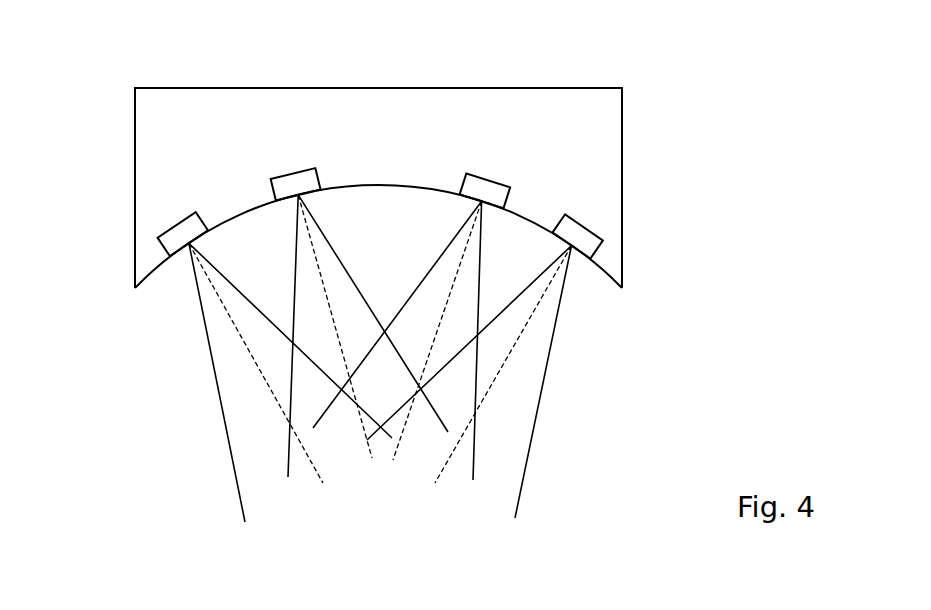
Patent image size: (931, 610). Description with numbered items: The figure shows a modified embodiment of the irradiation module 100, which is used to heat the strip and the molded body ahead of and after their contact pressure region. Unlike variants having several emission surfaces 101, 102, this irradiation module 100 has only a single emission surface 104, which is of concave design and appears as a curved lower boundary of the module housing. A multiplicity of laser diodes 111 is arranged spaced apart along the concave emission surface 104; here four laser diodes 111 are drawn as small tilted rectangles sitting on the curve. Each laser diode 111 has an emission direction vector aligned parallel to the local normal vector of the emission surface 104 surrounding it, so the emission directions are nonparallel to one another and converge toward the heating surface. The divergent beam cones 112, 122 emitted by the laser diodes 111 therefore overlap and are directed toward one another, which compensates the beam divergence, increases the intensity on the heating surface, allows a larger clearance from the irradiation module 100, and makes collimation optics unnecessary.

The irradiation module 100 is at (392, 231).
The emission surface 101 is at (392, 231).
The emission surface 102 is at (595, 178).
The emission surface 104 is at (147, 275).
The laser diode 111 is at (178, 233).
The beam cone 112 is at (447, 358).
The beam cone 122 is at (515, 402).